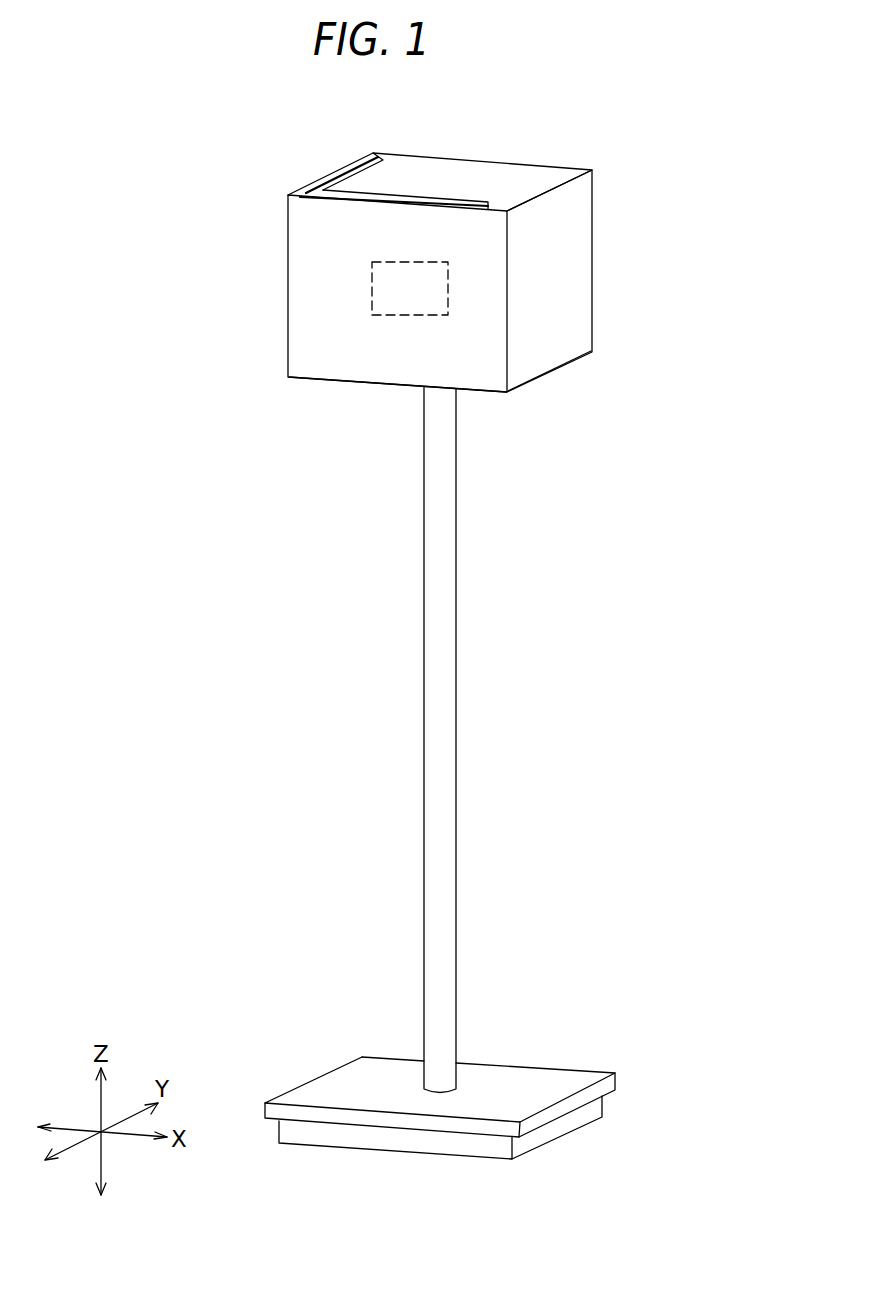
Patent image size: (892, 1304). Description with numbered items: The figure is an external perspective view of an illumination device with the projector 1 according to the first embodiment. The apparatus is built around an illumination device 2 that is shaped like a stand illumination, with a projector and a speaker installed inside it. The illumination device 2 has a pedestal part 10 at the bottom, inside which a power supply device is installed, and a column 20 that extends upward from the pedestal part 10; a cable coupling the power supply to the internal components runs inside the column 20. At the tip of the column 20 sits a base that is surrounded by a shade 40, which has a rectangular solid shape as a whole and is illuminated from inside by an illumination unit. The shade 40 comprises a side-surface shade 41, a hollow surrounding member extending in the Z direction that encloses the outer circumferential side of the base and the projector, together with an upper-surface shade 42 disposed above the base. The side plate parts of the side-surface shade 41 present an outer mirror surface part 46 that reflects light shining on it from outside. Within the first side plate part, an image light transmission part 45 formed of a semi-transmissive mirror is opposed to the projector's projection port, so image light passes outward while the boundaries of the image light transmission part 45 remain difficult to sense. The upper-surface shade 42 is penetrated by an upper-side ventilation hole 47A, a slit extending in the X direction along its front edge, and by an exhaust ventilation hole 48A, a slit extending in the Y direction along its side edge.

The illumination device with the projector 1 is at (250, 156).
The illumination device 2 is at (603, 201).
The pedestal part 10 is at (553, 1068).
The column 20 is at (457, 707).
The shade 40 is at (594, 292).
The side-surface shade 41 is at (594, 242).
The upper-surface shade 42 is at (518, 175).
The image light transmission part 45 is at (425, 300).
The mirror surface part 46 is at (421, 360).
The upper-side ventilation hole 47A is at (408, 202).
The exhaust ventilation hole 48A is at (342, 165).